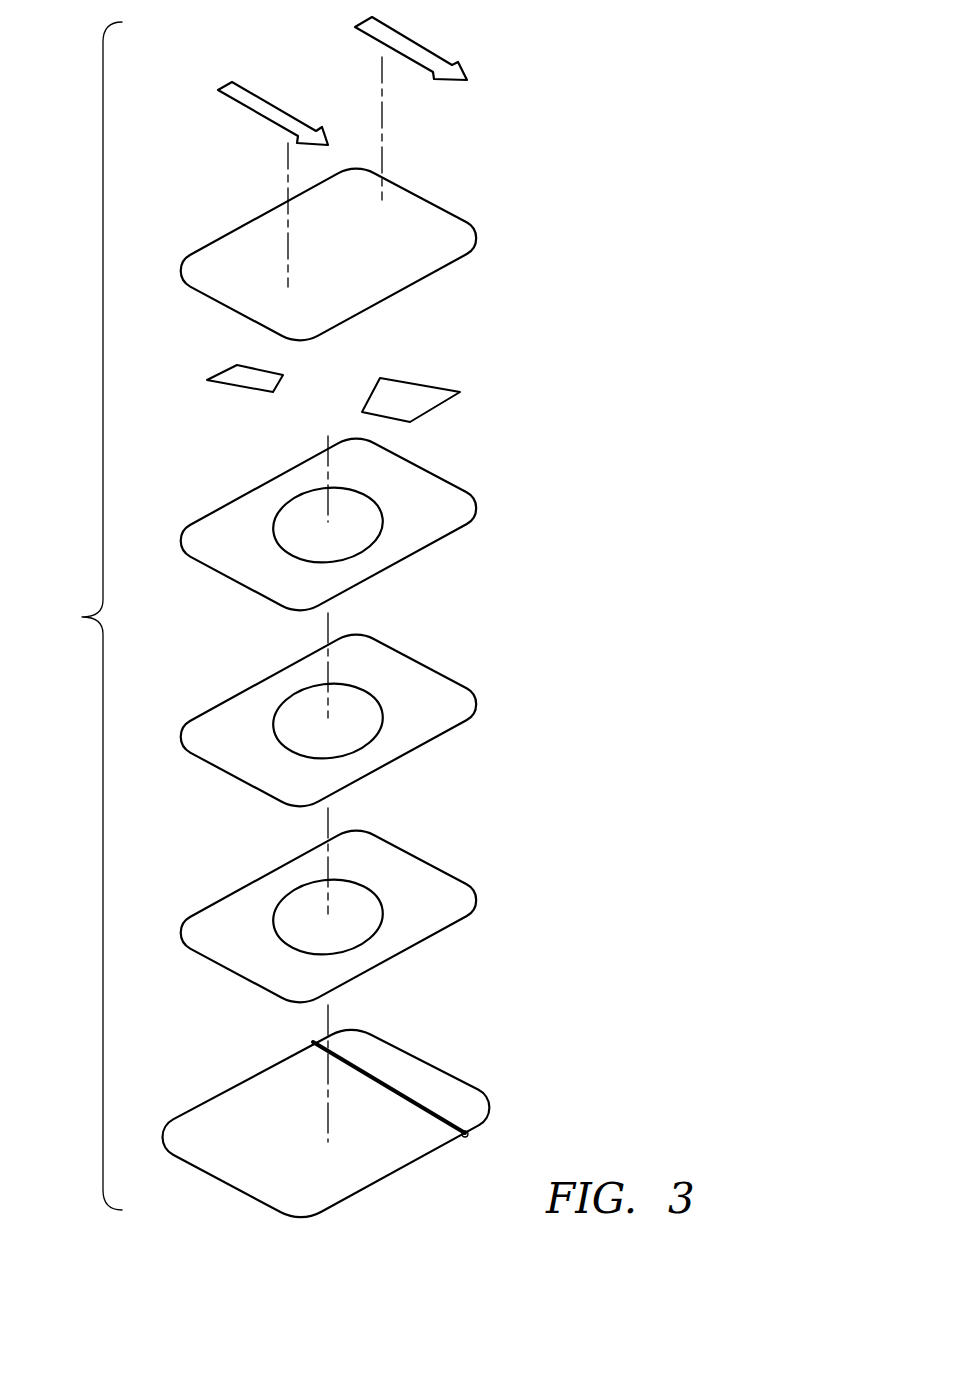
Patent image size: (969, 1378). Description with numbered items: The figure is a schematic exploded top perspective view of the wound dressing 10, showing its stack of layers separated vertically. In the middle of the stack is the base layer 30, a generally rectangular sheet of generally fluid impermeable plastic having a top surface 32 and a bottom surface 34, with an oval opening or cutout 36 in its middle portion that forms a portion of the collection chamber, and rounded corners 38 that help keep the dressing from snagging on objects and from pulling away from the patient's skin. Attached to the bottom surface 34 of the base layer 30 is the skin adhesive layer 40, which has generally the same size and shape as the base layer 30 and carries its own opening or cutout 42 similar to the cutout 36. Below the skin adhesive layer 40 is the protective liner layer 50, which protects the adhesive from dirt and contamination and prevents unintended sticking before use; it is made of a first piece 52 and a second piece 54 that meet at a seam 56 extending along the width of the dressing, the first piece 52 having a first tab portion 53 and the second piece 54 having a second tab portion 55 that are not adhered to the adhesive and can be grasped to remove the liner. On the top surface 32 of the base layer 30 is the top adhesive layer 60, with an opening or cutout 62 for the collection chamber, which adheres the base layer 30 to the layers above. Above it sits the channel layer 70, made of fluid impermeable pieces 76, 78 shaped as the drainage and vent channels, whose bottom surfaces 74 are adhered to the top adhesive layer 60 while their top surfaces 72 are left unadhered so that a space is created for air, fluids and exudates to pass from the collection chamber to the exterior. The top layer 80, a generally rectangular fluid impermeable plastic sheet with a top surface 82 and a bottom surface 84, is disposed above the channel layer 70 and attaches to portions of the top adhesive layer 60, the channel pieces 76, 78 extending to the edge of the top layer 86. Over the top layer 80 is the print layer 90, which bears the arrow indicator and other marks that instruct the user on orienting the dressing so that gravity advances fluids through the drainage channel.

The wound dressing 10 is at (85, 616).
The print layer 90 is at (557, 95).
The top layer 80 is at (557, 249).
The top surface 82 is at (397, 208).
The bottom surface 84 is at (440, 282).
The edge of the top layer 86 is at (373, 310).
The channel layer 70 is at (409, 375).
The top surfaces 72 is at (403, 392).
The bottom surfaces 74 is at (376, 420).
The piece of the channel layer 76 is at (450, 372).
The piece of the channel layer 78 is at (216, 352).
The top adhesive layer 60 is at (422, 523).
The opening or cutout 62 is at (304, 491).
The base layer 30 is at (418, 719).
The top surface 32 is at (397, 675).
The bottom surface 34 is at (424, 756).
The opening or cutout 36 is at (302, 691).
The rounded corners 38 is at (287, 808).
The skin adhesive layer 40 is at (422, 905).
The opening or cutout 42 is at (304, 881).
The protective liner layer 50 is at (413, 1110).
The first piece 52 is at (258, 1097).
The first tab portion 53 is at (465, 1137).
The second piece 54 is at (440, 1087).
The second tab portion 55 is at (469, 1135).
The seam 56 is at (390, 1063).